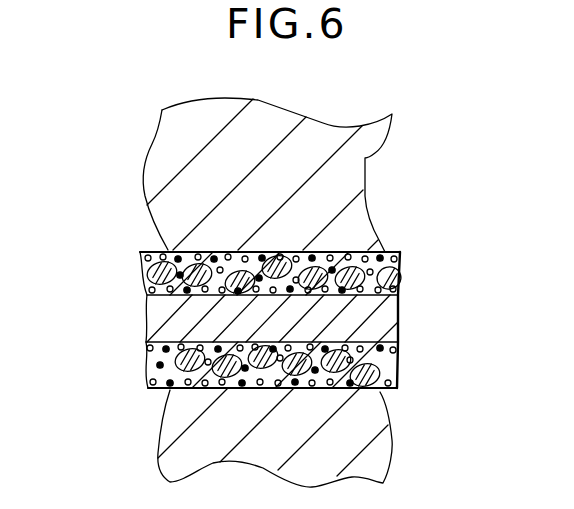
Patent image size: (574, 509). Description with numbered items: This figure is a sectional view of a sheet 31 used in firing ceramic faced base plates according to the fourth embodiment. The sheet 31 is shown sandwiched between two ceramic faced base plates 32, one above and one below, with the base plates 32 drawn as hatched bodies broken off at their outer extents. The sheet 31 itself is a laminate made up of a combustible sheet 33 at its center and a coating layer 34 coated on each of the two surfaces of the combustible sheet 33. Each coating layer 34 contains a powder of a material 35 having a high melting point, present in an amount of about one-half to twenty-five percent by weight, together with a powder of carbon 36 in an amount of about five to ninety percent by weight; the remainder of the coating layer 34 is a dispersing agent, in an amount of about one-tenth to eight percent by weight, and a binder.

The sheet 31 is at (140, 304).
The ceramic faced base plate 32 is at (365, 158).
The combustible sheet 33 is at (382, 323).
The coating layer 34 is at (397, 273).
The powder of a material having a high melting point 35 is at (402, 252).
The powder of carbon 36 is at (352, 252).